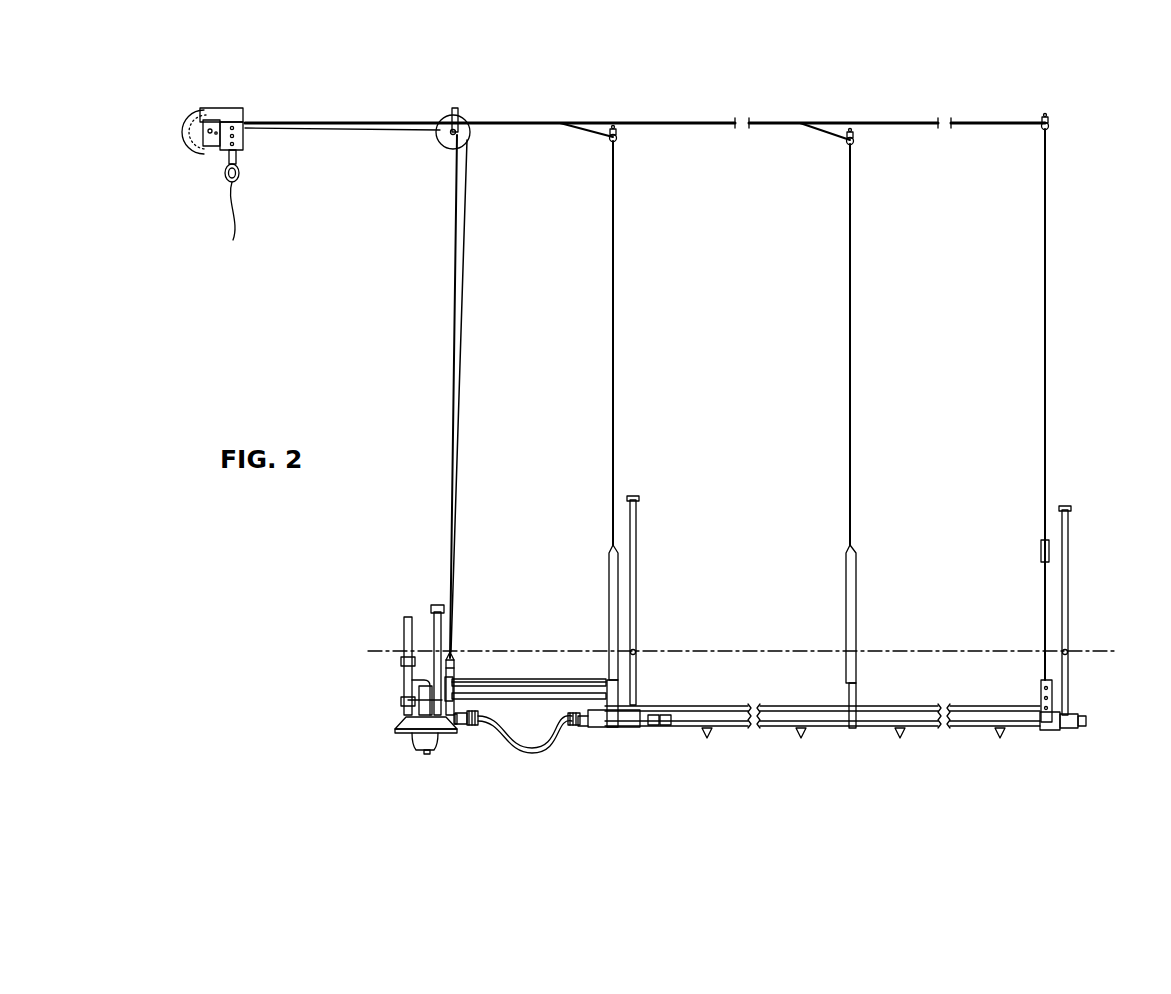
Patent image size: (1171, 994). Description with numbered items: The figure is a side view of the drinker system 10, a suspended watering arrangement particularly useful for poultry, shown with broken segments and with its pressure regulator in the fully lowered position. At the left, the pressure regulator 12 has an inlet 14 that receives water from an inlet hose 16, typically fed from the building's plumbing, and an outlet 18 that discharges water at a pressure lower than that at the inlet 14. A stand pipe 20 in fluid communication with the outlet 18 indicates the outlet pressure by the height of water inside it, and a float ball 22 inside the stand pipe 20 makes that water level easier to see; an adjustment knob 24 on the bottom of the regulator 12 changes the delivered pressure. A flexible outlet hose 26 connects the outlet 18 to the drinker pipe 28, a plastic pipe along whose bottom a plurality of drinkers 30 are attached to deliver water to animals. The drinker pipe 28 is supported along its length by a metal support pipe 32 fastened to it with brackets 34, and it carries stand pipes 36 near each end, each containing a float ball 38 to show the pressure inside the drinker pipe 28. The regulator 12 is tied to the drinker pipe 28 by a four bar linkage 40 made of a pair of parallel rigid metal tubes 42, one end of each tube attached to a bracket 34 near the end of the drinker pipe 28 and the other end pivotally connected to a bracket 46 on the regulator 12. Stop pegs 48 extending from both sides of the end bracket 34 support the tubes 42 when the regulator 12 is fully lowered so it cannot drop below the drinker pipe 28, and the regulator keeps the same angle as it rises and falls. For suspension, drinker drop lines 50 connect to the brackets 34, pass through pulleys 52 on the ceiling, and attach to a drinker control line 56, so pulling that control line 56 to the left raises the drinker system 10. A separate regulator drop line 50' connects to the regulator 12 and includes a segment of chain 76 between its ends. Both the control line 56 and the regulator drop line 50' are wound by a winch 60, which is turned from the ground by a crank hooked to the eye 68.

The drinker system 10 is at (1088, 752).
The pressure regulator 12 is at (400, 733).
The inlet 14 is at (408, 690).
The inlet hose 16 is at (406, 637).
The outlet 18 is at (462, 735).
The stand pipe 20 is at (433, 616).
The float ball 22 is at (440, 652).
The adjustment knob 24 is at (425, 753).
The flexible outlet hose 26 is at (523, 754).
The drinker pipe 28 is at (745, 735).
The drinkers 30 is at (707, 740).
The support pipe 32 is at (890, 710).
The brackets 34 is at (619, 702).
The stand pipe 36 is at (637, 523).
The float ball 38 is at (634, 652).
The four bar linkage 40 is at (499, 670).
The tubes 42 is at (567, 695).
The bracket 46 is at (466, 718).
The stop pegs 48 is at (583, 735).
The drinker drop lines 50 is at (877, 404).
The regulator drop line 50' is at (508, 396).
The pulleys 52 is at (617, 140).
The drinker control line 56 is at (772, 126).
The winch 60 is at (243, 109).
The eye 68 is at (235, 224).
The chain 76 is at (457, 180).